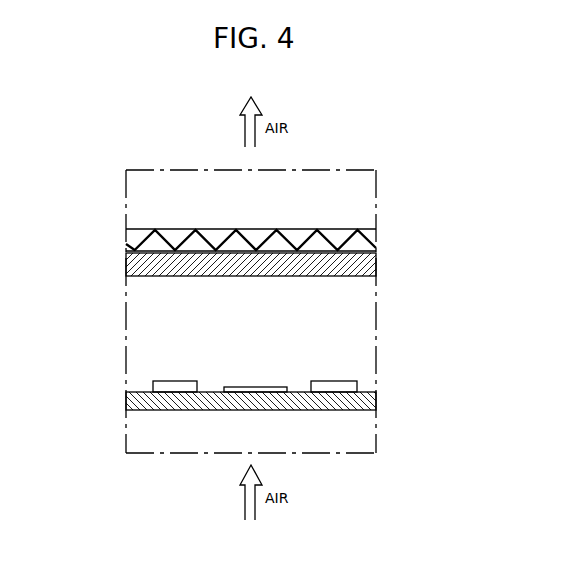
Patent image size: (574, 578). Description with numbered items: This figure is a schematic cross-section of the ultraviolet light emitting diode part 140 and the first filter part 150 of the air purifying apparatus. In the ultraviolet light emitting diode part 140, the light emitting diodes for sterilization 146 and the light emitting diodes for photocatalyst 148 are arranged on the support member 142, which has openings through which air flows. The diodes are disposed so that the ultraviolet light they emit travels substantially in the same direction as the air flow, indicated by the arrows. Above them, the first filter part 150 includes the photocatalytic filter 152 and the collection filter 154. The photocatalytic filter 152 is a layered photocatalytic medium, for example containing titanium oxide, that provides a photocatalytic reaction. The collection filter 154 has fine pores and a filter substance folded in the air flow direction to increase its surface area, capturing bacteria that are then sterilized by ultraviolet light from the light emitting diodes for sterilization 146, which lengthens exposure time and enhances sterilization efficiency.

The ultraviolet light emitting diode part 140 is at (117, 399).
The support member 142 is at (290, 398).
The light emitting diodes for sterilization 146 is at (158, 387).
The light emitting diodes for photocatalyst 148 is at (254, 389).
The first filter part 150 is at (309, 241).
The photocatalytic filter 152 is at (287, 264).
The collection filter 154 is at (376, 241).